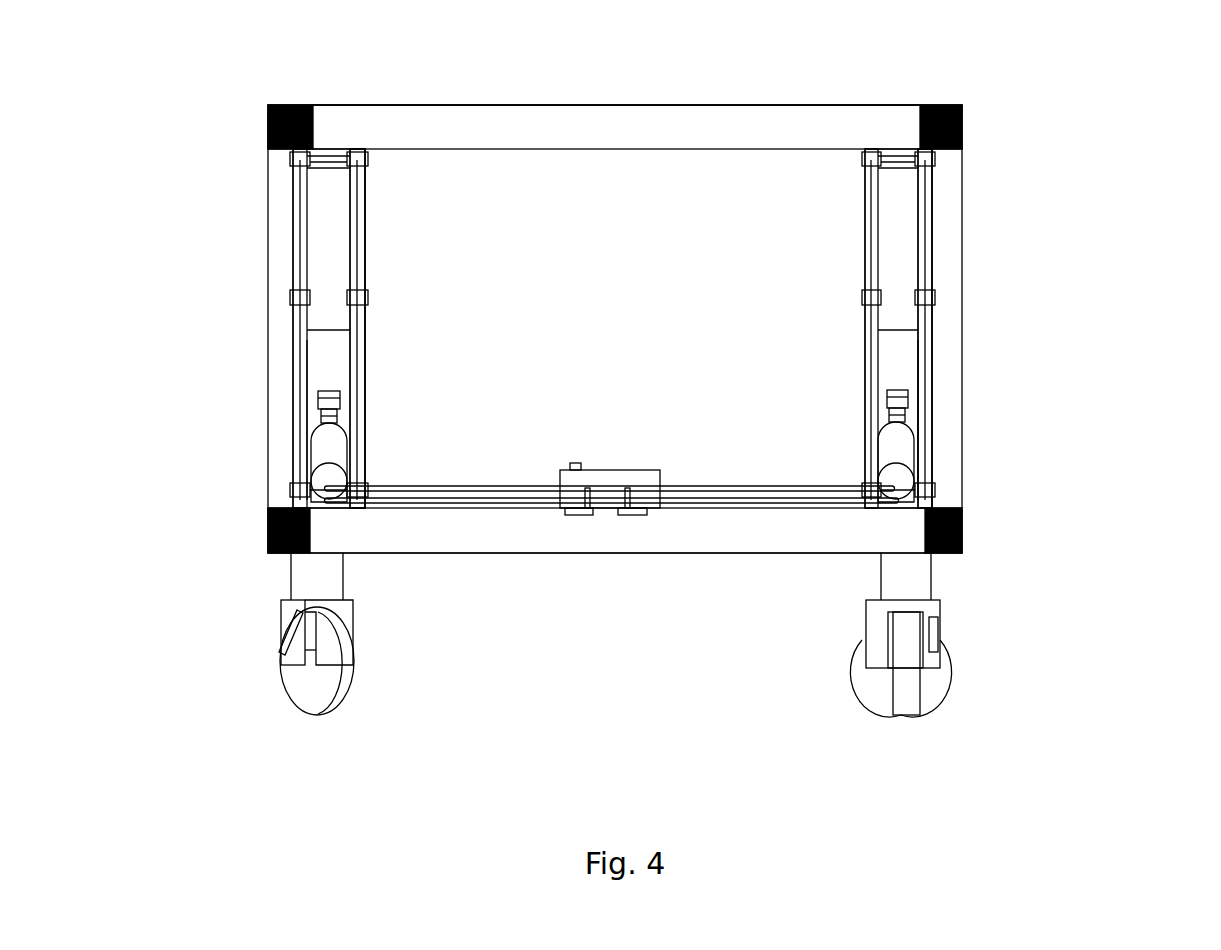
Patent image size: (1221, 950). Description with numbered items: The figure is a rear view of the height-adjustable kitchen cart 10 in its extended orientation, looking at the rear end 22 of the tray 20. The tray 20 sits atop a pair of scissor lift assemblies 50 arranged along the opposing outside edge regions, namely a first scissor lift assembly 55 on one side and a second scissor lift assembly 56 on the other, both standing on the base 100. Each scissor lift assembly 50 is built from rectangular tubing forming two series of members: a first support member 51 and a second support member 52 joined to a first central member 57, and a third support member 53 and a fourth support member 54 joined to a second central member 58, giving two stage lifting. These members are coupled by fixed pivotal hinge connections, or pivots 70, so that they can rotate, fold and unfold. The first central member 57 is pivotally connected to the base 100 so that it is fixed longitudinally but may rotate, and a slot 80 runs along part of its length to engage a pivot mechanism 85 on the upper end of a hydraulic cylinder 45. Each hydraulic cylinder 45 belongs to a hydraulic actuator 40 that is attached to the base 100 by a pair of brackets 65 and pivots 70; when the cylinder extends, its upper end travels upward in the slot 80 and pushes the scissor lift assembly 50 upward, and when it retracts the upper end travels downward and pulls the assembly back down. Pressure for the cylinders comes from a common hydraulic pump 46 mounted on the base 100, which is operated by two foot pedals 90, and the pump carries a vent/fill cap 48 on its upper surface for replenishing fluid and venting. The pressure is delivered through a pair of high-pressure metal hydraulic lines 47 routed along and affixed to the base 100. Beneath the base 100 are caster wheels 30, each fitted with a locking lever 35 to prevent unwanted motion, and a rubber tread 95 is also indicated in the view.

The height-adjustable kitchen cart 10 is at (1124, 177).
The tray 20 is at (562, 137).
The rear end 22 is at (693, 121).
The caster wheel 30 is at (340, 672).
The locking lever 35 is at (290, 632).
The hydraulic actuator 40 is at (322, 446).
The hydraulic cylinder 45 is at (335, 412).
The hydraulic pump 46 is at (650, 493).
The hydraulic line 47 is at (440, 492).
The vent/fill cap 48 is at (572, 465).
The scissor lift assembly 50 is at (376, 447).
The first support member 51 is at (366, 332).
The second support member 52 is at (303, 335).
The third support member 53 is at (362, 240).
The fourth support member 54 is at (298, 213).
The first scissor lift assembly 55 is at (1075, 390).
The second scissor lift assembly 56 is at (175, 345).
The first central member 57 is at (308, 382).
The second central member 58 is at (315, 237).
The bracket 65 is at (297, 160).
The pivot 70 is at (290, 158).
The slot 80 is at (320, 415).
The pivot mechanism 85 is at (330, 397).
The foot pedal 90 is at (590, 516).
The rubber tread 95 is at (587, 500).
The base 100 is at (566, 560).